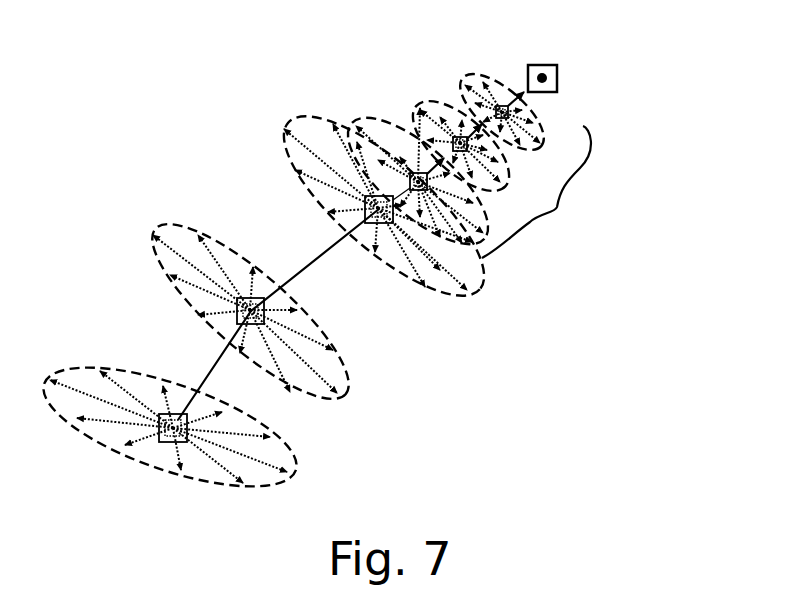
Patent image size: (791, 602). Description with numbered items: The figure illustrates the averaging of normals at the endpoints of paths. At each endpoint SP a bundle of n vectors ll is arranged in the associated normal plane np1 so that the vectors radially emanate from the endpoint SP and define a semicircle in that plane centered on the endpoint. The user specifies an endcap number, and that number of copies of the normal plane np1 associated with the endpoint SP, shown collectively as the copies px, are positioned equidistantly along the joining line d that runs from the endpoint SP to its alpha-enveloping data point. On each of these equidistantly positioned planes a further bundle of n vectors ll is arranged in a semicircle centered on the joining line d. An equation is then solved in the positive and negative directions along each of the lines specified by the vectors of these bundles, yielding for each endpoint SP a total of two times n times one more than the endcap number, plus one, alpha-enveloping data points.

The bundle of n vectors ll is at (292, 258).
The normal plane np1 is at (391, 187).
The endpoint SP is at (170, 442).
The joining line d is at (474, 119).
The endcap number copies of the normal plane px is at (537, 192).